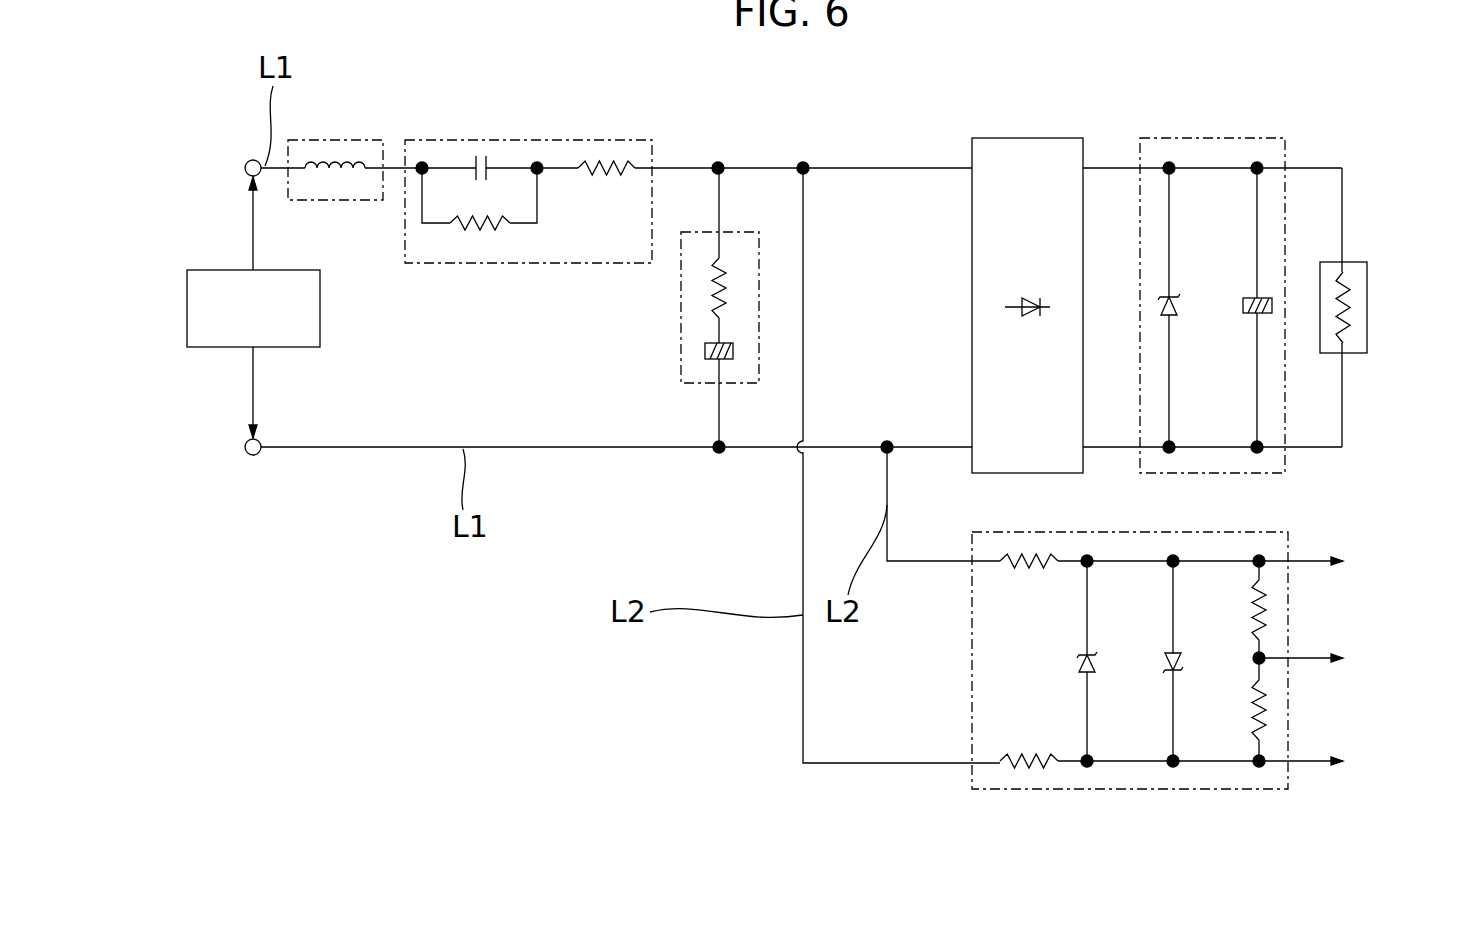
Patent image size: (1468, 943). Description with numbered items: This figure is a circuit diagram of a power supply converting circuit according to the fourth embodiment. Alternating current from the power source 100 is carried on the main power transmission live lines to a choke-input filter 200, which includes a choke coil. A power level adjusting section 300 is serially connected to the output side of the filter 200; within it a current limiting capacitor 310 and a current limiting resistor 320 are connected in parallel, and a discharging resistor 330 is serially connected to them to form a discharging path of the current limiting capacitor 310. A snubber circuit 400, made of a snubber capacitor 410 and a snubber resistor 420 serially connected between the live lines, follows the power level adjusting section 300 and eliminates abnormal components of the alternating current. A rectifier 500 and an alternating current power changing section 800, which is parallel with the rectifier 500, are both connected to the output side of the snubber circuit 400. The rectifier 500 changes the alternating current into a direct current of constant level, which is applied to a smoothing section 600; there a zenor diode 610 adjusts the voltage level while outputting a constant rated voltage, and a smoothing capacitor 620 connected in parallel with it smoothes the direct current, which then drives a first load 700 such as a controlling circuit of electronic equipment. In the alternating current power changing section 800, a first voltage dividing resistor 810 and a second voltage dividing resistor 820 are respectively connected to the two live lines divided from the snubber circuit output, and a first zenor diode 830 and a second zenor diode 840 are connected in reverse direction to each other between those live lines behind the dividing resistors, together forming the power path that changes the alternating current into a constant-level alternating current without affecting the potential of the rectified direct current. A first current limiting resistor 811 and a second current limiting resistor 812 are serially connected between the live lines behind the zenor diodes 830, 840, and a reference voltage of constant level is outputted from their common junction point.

The power source 100 is at (218, 268).
The choke-input filter 200 is at (337, 140).
The power level adjusting section 300 is at (561, 196).
The current limiting capacitor 310 is at (478, 156).
The current limiting resistor 320 is at (470, 230).
The discharging resistor 330 is at (618, 162).
The snubber circuit 400 is at (698, 297).
The snubber capacitor 410 is at (727, 362).
The snubber resistor 420 is at (727, 283).
The rectifier 500 is at (1027, 138).
The smoothing section 600 is at (1220, 261).
The zenor diode 610 is at (1165, 295).
The smoothing capacitor 620 is at (1263, 297).
The first load 700 is at (1352, 262).
The alternating current power changing section 800 is at (1185, 663).
The first voltage dividing resistor 810 is at (972, 548).
The first current limiting resistor 811 is at (1265, 600).
The second current limiting resistor 812 is at (1265, 698).
The second voltage dividing resistor 820 is at (1030, 770).
The first zenor diode 830 is at (1090, 672).
The second zenor diode 840 is at (1176, 672).